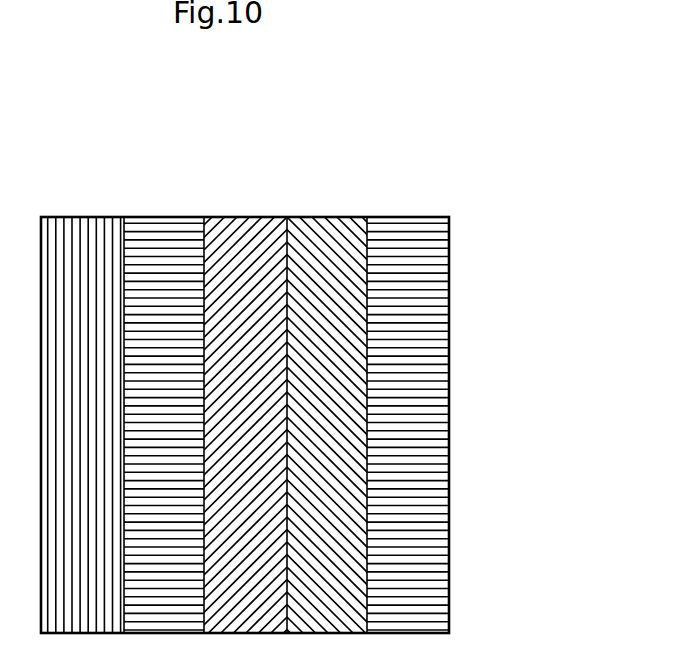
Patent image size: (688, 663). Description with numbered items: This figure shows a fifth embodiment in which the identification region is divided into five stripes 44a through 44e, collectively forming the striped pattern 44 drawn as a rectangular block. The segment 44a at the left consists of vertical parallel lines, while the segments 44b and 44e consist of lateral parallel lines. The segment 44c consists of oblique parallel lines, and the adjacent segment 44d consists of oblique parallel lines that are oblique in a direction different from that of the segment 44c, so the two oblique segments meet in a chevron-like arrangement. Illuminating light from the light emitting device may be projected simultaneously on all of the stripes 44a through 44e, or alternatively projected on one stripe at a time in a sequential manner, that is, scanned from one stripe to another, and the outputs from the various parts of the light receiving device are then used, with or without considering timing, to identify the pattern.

The identification region stripes 44 is at (459, 392).
The segment of vertical parallel lines 44a is at (83, 232).
The segment of lateral parallel lines 44b is at (173, 232).
The segment of oblique parallel lines 44c is at (259, 233).
The segment of oblique parallel lines in a different direction 44d is at (325, 233).
The segment of lateral parallel lines 44e is at (417, 232).